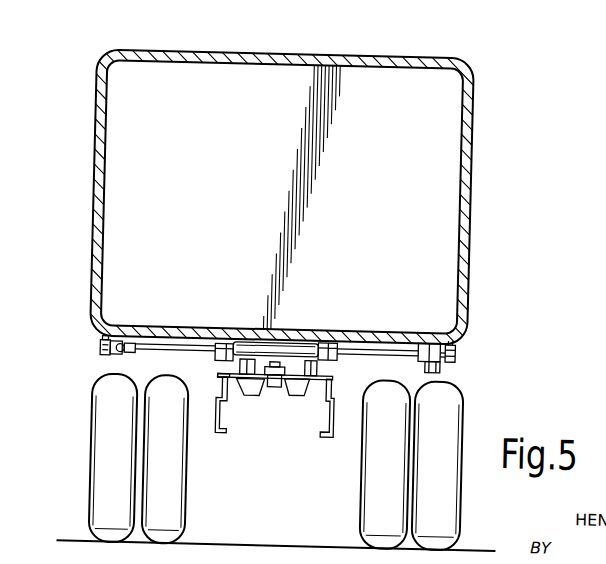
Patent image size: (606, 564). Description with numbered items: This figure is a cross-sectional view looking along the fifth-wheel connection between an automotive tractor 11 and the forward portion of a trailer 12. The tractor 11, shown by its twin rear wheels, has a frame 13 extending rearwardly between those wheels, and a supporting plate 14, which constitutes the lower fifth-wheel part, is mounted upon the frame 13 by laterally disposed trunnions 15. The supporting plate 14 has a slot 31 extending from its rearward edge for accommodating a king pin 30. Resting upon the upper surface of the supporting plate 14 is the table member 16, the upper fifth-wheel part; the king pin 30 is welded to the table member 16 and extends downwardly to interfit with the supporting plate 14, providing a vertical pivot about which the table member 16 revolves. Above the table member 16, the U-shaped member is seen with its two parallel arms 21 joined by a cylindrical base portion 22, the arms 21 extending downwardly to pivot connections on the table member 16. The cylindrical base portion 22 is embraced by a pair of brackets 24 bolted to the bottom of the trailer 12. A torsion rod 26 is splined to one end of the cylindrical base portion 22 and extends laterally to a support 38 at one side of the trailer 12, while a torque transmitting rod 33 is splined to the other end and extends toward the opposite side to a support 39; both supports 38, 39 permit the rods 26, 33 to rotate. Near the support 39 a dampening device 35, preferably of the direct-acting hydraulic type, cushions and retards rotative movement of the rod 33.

The automotive tractor 11 is at (94, 447).
The trailer 12 is at (471, 194).
The frame 13 is at (224, 432).
The supporting plate 14 is at (338, 377).
The trunnions 15 is at (226, 392).
The table member 16 is at (222, 376).
The arms 21 is at (244, 365).
The cylindrical base portion 22 is at (294, 345).
The brackets 24 is at (223, 345).
The torsion rod 26 is at (156, 351).
The king pin 30 is at (276, 388).
The slot 31 is at (284, 387).
The torque transmitting rod 33 is at (384, 351).
The dampening devices 35 is at (446, 363).
The support 38 is at (104, 360).
The support 39 is at (454, 359).